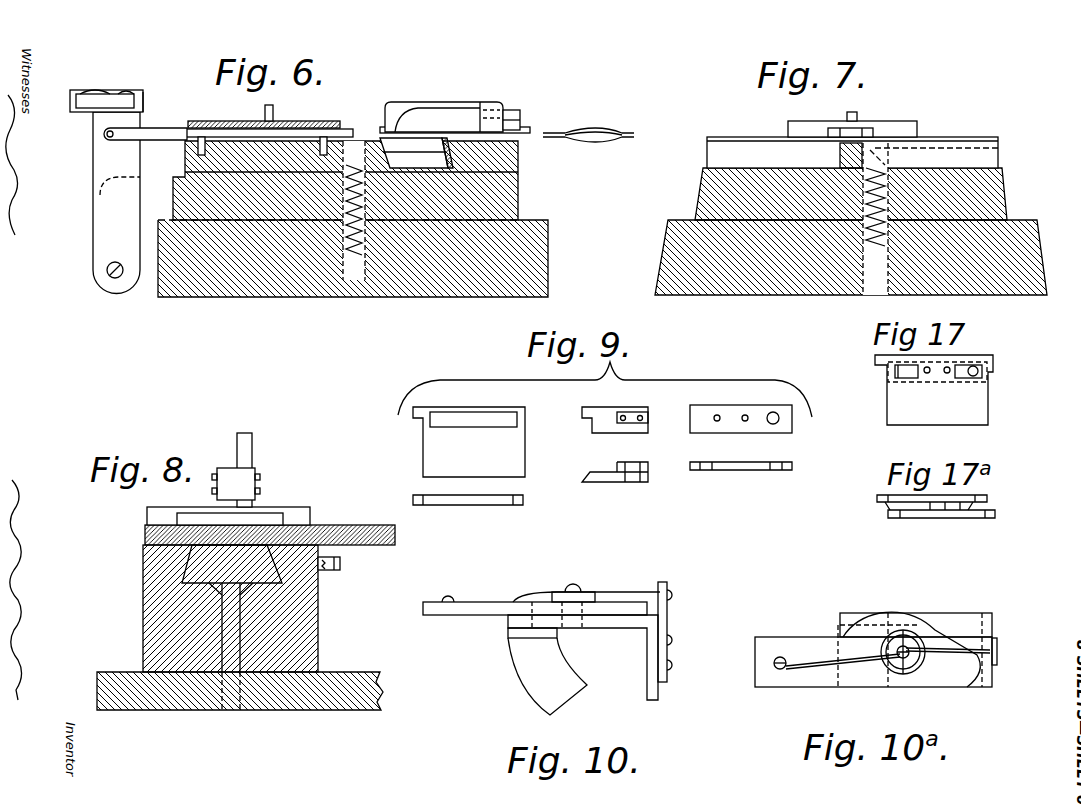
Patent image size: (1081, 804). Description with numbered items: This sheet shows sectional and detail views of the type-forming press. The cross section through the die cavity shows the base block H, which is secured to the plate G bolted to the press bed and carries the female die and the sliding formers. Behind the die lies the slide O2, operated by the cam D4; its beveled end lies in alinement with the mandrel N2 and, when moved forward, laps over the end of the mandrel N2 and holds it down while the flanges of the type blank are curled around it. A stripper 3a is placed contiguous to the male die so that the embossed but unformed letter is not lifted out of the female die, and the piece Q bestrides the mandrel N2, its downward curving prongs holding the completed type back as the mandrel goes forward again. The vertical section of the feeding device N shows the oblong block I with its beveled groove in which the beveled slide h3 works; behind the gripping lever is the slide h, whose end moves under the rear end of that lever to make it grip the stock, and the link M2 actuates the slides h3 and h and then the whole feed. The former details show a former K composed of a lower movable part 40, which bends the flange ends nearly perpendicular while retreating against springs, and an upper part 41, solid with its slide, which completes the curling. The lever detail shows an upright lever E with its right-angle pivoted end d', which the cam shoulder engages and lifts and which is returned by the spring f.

In FIG. 6, the cam D4 is at (78, 115).
In FIG. 6, the slide O2 is at (165, 127).
In FIG. 7, the slide O2 is at (858, 136).
In FIG. 6, the stripper 3a is at (370, 136).
In FIG. 7, the stripper 3a is at (886, 163).
In FIG. 6, the piece bestriding the mandrel Q is at (452, 102).
In FIG. 6, the mandrel N2 is at (567, 128).
In FIG. 6, the base block H is at (512, 192).
In FIG. 7, the base block H is at (710, 192).
In FIG. 8, the link M2 is at (248, 456).
In FIG. 8, the slide h is at (270, 520).
In FIG. 8, the beveled slide h3 is at (145, 566).
In FIG. 8, the feeding device N is at (322, 590).
In FIG. 8, the oblong block I is at (310, 630).
In FIG. 8, the plate G is at (300, 704).
In FIG. 9, the lower part of former 40 is at (469, 456).
In FIG. 17, the lower part of former 40 is at (982, 404).
In FIG. 9, the former K is at (700, 462).
In FIG. 9, the upper part of former 41 is at (640, 481).
In FIG. 17, the upper part of former 41 is at (910, 375).
In FIG. 17A, the upper part of former 41 is at (937, 505).
In FIG. 10, the spring f is at (514, 600).
In FIG. 10A, the spring f is at (800, 650).
In FIG. 10, the lever end d' is at (535, 585).
In FIG. 10A, the lever end d' is at (867, 666).
In FIG. 10, the upright lever E is at (645, 648).
In FIG. 10A, the upright lever E is at (857, 614).